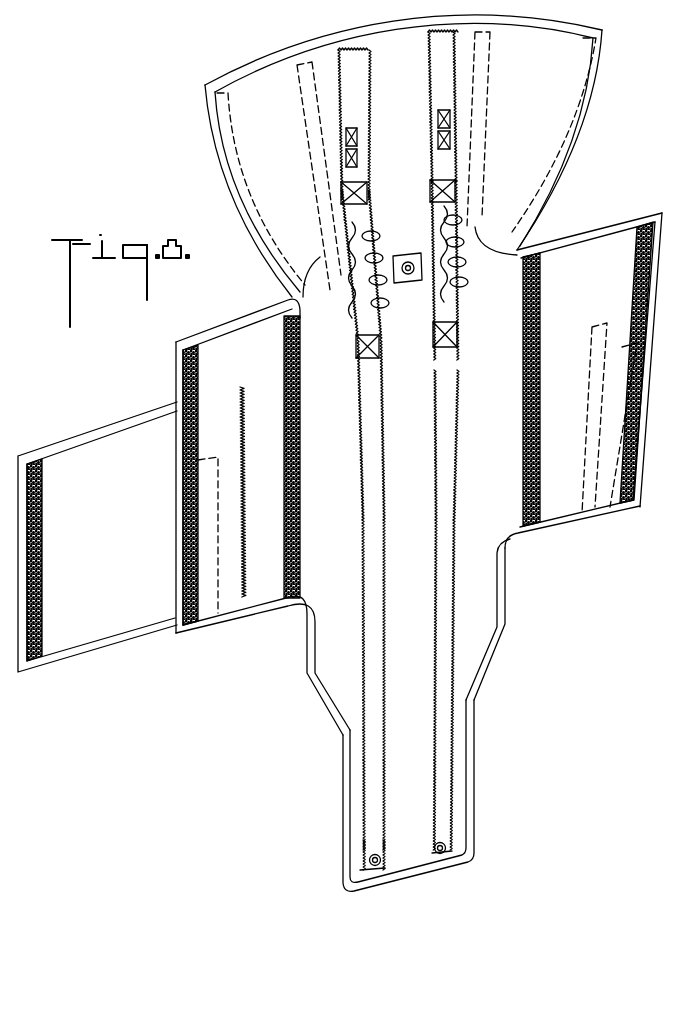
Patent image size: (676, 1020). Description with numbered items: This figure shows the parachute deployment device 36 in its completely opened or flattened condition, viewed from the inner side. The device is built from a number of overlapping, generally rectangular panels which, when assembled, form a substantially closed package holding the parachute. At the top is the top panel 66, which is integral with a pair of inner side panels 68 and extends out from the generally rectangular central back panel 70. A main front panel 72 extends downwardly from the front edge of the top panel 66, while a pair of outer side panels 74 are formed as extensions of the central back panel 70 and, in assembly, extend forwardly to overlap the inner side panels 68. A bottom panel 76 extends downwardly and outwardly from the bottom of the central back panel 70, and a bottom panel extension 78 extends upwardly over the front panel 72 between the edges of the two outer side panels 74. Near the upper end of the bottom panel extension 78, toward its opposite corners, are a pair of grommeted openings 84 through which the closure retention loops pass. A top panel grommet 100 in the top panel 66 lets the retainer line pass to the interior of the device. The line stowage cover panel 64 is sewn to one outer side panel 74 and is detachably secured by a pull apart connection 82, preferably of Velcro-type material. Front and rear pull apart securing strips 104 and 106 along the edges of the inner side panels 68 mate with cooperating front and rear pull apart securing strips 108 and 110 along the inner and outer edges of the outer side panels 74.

The parachute deployment device 36 is at (193, 102).
The line stowage cover panel 64 is at (115, 446).
The top panel 66 is at (302, 295).
The inner side panels 68 is at (266, 85).
The central back panel 70 is at (502, 523).
The main front panel 72 is at (390, 42).
The outer side panels 74 is at (247, 336).
The bottom panel 76 is at (330, 642).
The bottom panel extension 78 is at (355, 816).
The pull apart connection 82 is at (40, 460).
The grommeted openings 84 is at (435, 847).
The top panel grommet 100 is at (406, 254).
The front pull apart securing strip 104 is at (240, 177).
The rear pull apart securing strip 106 is at (307, 138).
The front pull apart securing strip 108 is at (290, 372).
The rear pull apart securing strip 110 is at (190, 372).